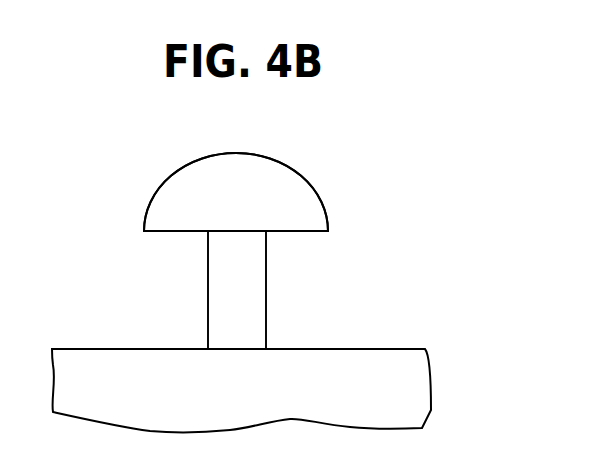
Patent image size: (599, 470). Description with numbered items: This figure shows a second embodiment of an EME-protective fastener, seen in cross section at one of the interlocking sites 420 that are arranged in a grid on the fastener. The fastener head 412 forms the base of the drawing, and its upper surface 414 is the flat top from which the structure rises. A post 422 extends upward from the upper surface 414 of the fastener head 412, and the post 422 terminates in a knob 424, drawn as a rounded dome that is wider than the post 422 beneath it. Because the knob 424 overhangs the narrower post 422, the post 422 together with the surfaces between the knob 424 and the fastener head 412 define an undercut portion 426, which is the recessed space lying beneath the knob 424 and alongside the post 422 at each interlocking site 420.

The fastener head 412 is at (432, 388).
The upper surface 414 is at (392, 349).
The interlocking site 420 is at (172, 180).
The post 422 is at (266, 315).
The knob 424 is at (302, 182).
The undercut portion 426 is at (166, 264).